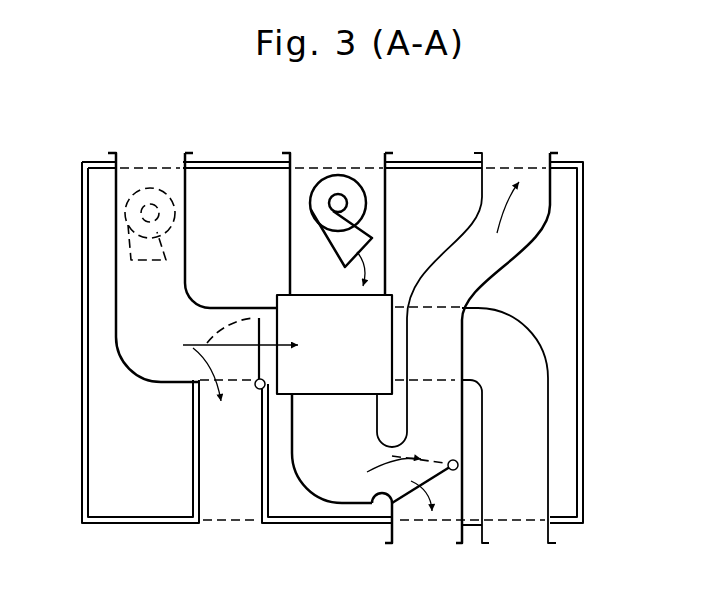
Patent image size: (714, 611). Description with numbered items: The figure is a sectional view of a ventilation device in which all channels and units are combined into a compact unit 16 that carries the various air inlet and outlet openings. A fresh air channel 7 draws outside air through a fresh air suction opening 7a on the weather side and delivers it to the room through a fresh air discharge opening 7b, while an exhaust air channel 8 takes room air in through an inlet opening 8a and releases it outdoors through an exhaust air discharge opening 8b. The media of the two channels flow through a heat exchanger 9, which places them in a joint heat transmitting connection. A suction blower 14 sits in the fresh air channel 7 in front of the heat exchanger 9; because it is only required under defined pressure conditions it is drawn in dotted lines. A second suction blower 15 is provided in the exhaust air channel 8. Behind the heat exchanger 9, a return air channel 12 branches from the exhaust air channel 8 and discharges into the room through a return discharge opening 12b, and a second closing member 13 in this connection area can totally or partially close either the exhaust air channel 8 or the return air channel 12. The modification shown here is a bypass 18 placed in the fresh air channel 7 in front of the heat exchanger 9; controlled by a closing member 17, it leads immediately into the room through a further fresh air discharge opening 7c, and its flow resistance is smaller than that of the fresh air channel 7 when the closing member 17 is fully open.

The fresh air channel 7 is at (156, 336).
The fresh air suction opening 7a is at (149, 156).
The fresh air discharge opening 7b is at (513, 523).
The further fresh air discharge opening 7c is at (229, 527).
The exhaust air channel 8 is at (334, 400).
The inlet opening 8a is at (336, 105).
The exhaust air discharge opening 8b is at (516, 181).
The heat exchanger 9 is at (331, 362).
The return air channel 12 is at (412, 503).
The return discharge opening 12b is at (432, 522).
The second closing member 13 is at (373, 500).
The suction blower 14 is at (131, 231).
The suction blower 15 is at (331, 235).
The compact unit 16 is at (79, 414).
The closing member 17 is at (259, 318).
The bypass 18 is at (216, 457).